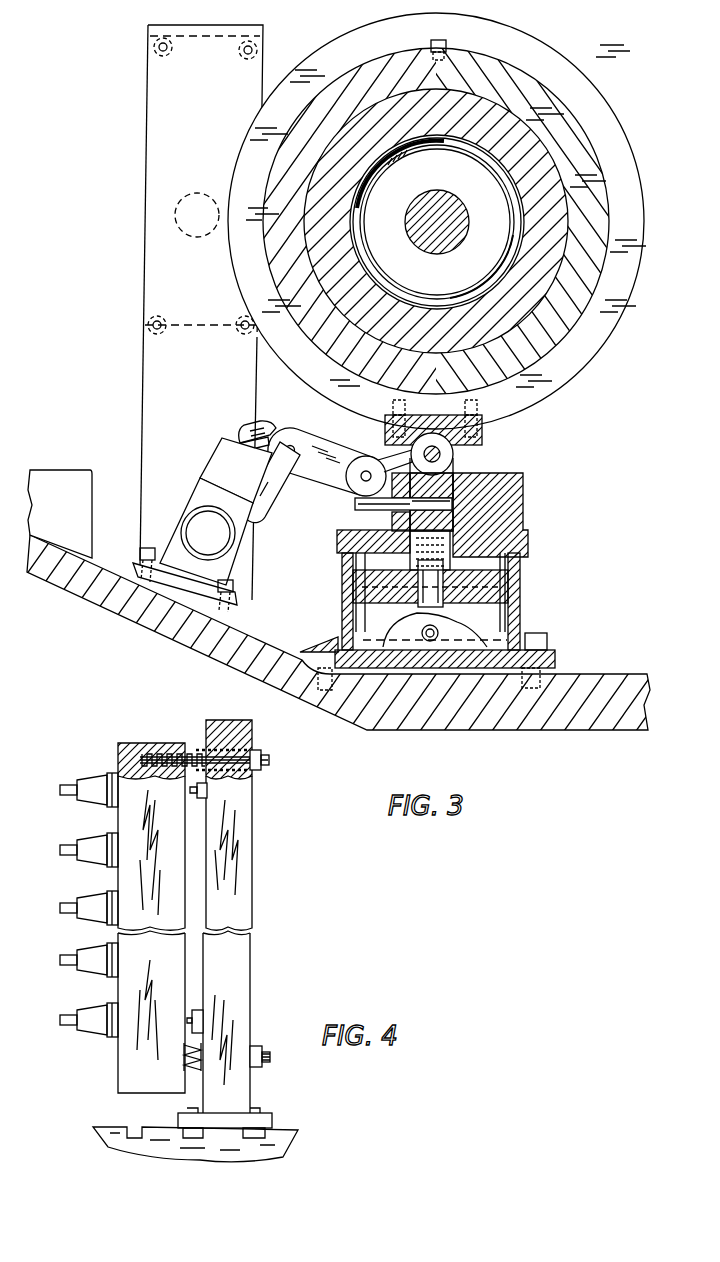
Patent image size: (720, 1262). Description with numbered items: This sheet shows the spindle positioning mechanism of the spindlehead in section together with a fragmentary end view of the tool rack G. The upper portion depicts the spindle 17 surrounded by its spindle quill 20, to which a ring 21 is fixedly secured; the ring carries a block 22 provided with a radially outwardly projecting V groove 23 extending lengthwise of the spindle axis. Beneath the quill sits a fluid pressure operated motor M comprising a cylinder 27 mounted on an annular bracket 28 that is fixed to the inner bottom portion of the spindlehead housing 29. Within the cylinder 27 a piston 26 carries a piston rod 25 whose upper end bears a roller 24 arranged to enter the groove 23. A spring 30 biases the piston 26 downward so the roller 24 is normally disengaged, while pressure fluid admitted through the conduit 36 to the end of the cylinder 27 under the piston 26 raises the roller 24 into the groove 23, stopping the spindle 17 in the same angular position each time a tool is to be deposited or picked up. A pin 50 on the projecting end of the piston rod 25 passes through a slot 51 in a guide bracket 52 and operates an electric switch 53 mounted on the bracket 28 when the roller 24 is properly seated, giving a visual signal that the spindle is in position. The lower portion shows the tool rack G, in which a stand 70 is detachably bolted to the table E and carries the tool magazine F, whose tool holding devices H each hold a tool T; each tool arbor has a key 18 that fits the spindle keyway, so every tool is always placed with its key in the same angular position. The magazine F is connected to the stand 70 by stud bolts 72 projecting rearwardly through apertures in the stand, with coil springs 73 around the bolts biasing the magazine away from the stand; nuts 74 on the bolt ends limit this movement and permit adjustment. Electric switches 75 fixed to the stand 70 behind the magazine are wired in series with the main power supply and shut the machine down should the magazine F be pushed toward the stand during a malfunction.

In FIG. 3, the spindle 17 is at (540, 172).
In FIG. 3, the spindle quill 20 is at (585, 280).
In FIG. 3, the ring 21 is at (583, 362).
In FIG. 3, the block 22 is at (487, 437).
In FIG. 3, the V groove 23 is at (385, 450).
In FIG. 3, the roller 24 is at (443, 461).
In FIG. 3, the piston rod 25 is at (453, 522).
In FIG. 3, the piston 26 is at (518, 623).
In FIG. 3, the cylinder 27 is at (342, 594).
In FIG. 3, the annular bracket 28 is at (325, 644).
In FIG. 3, the spindlehead housing 29 is at (582, 732).
In FIG. 3, the spring 30 is at (410, 560).
In FIG. 3, the conduit 36 is at (448, 642).
In FIG. 3, the pin 50 is at (355, 502).
In FIG. 3, the slot 51 is at (410, 520).
In FIG. 3, the guide bracket 52 is at (520, 526).
In FIG. 3, the electric switch 53 is at (226, 462).
In FIG. 3, the fluid pressure operated motor M is at (526, 583).
In FIG. 4, the key 18 is at (107, 1025).
In FIG. 4, the stand 70 is at (252, 838).
In FIG. 4, the stud bolt 72 is at (263, 760).
In FIG. 4, the coil spring 73 is at (193, 748).
In FIG. 4, the nut 74 is at (258, 748).
In FIG. 4, the electric switch 75 is at (207, 795).
In FIG. 4, the tool magazine F is at (142, 718).
In FIG. 4, the tool rack G is at (255, 900).
In FIG. 4, the tool holding device H is at (113, 772).
In FIG. 4, the tool T is at (87, 805).
In FIG. 4, the table E is at (103, 1127).